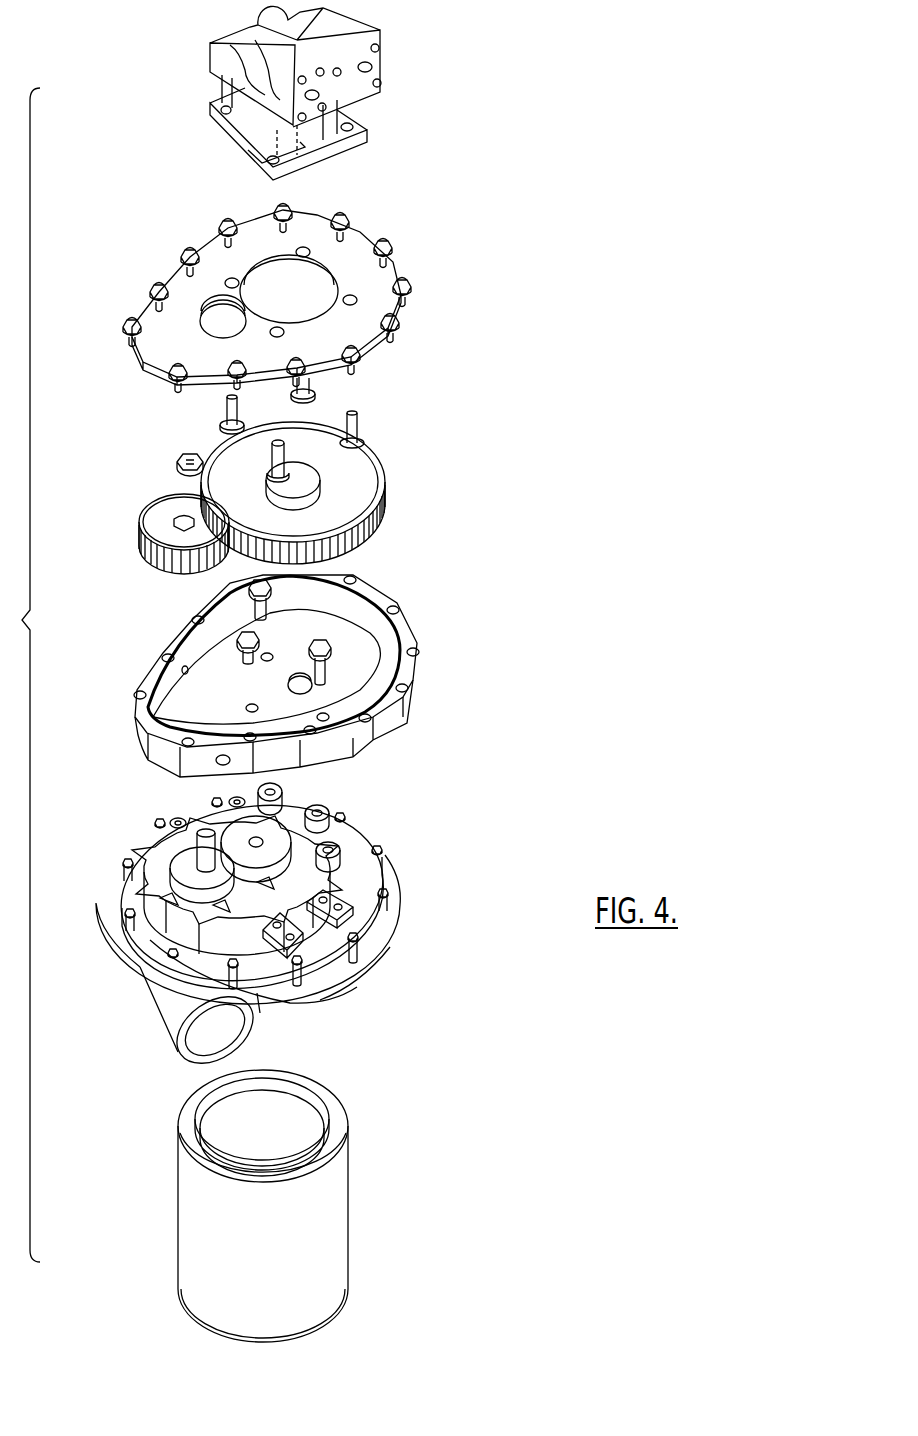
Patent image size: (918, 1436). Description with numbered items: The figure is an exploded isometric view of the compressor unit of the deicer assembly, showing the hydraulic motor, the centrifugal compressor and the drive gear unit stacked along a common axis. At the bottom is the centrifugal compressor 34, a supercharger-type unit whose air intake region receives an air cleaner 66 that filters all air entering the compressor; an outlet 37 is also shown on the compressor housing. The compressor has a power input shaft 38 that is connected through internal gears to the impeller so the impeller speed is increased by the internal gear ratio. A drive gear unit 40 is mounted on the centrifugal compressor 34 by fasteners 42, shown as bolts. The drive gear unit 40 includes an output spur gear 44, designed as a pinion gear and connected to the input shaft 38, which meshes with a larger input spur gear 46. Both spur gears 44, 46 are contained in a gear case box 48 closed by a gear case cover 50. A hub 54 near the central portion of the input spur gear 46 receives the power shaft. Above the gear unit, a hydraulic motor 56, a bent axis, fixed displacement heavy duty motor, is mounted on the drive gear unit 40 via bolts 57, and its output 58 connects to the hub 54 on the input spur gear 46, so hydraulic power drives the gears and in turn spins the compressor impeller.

The centrifugal compressor 34 is at (275, 922).
The outlet 37 is at (247, 1030).
The power input shaft 38 is at (205, 850).
The drive gear unit 40 is at (453, 558).
The fasteners 42 is at (387, 637).
The output spur gear 44 is at (148, 530).
The input spur gear 46 is at (322, 493).
The gear case box 48 is at (405, 710).
The gear case cover 50 is at (387, 297).
The hub 54 is at (312, 480).
The hydraulic motor 56 is at (210, 116).
The bolts 57 is at (240, 412).
The output 58 is at (310, 160).
The air cleaner 66 is at (347, 1138).